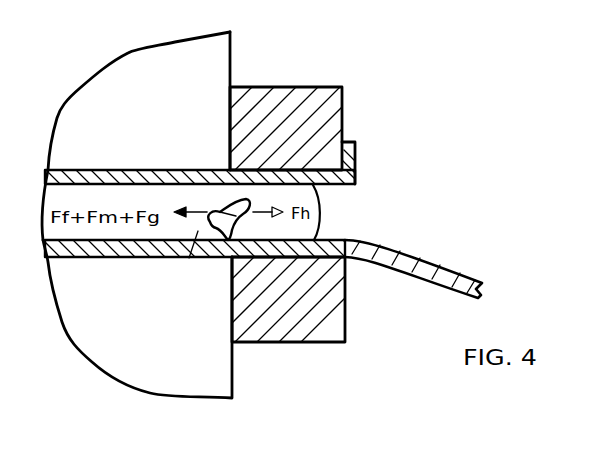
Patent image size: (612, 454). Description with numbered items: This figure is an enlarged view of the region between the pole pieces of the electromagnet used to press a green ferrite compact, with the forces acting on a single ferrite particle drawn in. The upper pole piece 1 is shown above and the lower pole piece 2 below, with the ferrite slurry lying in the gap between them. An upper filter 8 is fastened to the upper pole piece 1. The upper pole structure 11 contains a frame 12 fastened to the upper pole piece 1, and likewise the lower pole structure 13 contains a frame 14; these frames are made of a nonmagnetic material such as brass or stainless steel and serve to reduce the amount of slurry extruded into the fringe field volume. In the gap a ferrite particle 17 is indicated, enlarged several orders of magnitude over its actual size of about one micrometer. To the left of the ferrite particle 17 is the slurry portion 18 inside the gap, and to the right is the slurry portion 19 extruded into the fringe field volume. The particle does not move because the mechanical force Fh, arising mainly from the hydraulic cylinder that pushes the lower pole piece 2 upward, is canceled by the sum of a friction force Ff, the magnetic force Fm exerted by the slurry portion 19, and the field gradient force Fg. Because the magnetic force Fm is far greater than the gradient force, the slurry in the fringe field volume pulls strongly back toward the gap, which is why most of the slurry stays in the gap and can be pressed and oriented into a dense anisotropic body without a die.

The upper pole piece 1 is at (68, 113).
The lower pole piece 2 is at (70, 275).
The upper filter 8 is at (351, 159).
The upper pole structure 11 is at (343, 111).
The frame 12 is at (287, 100).
The lower pole structure 13 is at (345, 279).
The frame 14 is at (297, 343).
The ferrite particle 17 is at (228, 200).
The slurry portion 18 is at (189, 258).
The slurry portion 19 is at (303, 233).